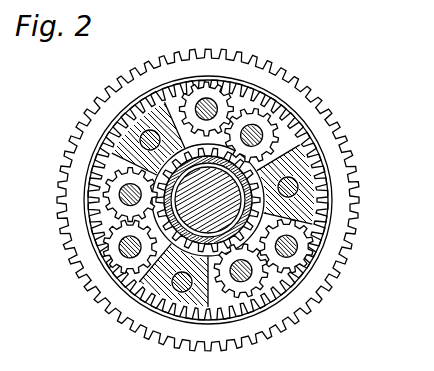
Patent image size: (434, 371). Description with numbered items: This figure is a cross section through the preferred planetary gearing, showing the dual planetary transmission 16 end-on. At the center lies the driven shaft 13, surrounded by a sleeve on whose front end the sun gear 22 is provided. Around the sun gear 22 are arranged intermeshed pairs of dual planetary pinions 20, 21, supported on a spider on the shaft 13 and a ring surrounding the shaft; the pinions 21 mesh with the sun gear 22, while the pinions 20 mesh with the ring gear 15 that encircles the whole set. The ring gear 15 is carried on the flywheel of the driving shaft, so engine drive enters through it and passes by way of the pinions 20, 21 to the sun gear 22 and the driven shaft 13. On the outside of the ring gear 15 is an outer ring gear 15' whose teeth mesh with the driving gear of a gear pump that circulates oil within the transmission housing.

The driven shaft 13 is at (242, 202).
The ring gear 15 is at (208, 200).
The outer ring gear 15' is at (208, 189).
The dual planetary transmission 16 is at (344, 237).
The planetary pinions 20 is at (207, 96).
The planetary pinions 21 is at (276, 143).
The sun gear 22 is at (296, 146).